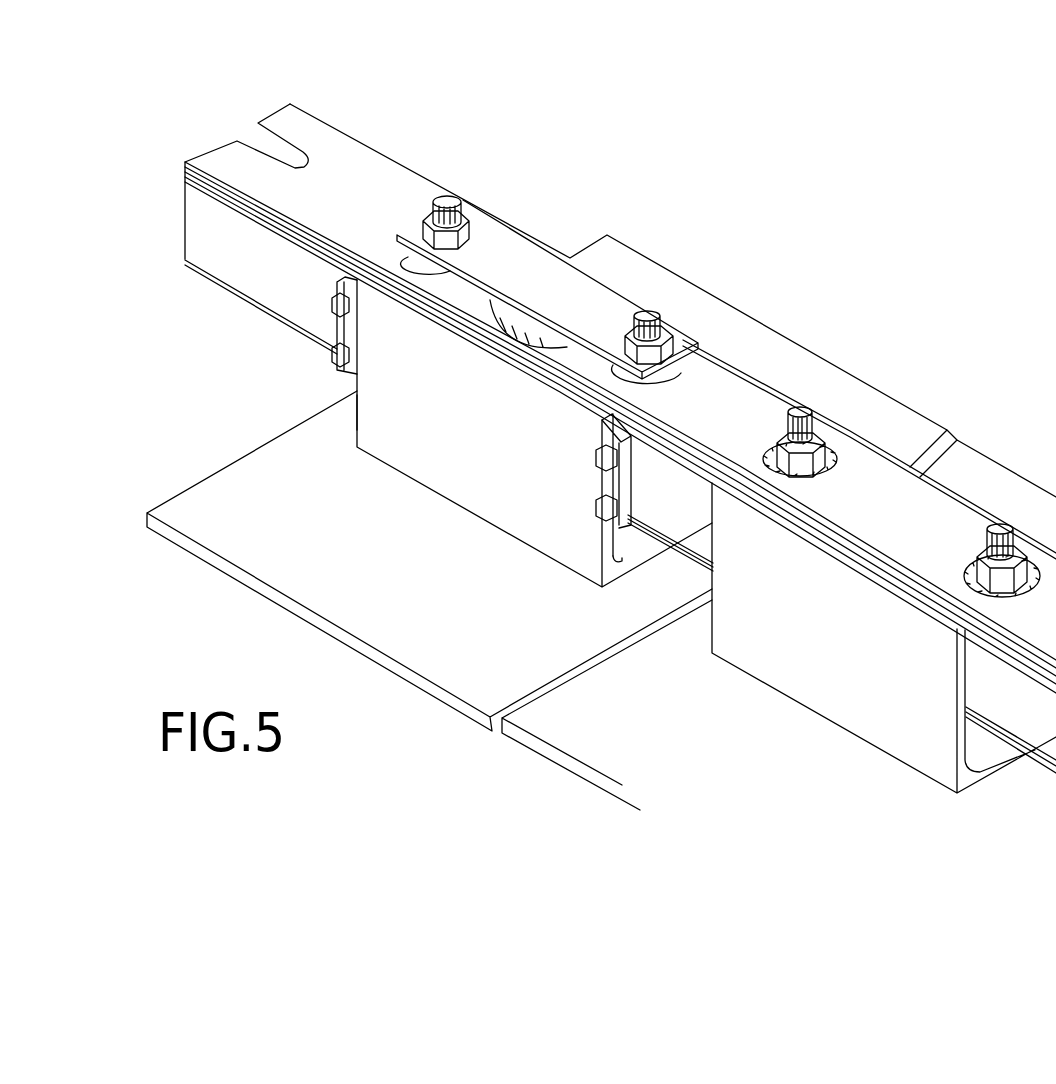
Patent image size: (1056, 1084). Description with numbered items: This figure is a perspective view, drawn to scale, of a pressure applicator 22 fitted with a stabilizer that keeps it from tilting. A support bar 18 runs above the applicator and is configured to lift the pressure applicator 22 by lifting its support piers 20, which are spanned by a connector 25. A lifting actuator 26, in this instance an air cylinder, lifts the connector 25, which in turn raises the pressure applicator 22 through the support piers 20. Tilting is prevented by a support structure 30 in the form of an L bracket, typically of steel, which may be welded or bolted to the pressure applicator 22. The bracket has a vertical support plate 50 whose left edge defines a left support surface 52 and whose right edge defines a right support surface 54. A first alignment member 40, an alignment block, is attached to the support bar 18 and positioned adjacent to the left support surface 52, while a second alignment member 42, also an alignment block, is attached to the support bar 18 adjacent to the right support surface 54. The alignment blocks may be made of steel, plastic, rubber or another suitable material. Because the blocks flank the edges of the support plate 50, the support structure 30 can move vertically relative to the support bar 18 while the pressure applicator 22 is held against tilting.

The support bar 18 is at (353, 177).
The support piers 20 is at (457, 205).
The pressure applicator 22 is at (218, 490).
The connector 25 is at (527, 267).
The lifting actuator 26 is at (593, 263).
The support structure 30 is at (485, 433).
The first alignment member 40 is at (347, 323).
The second alignment member 42 is at (618, 521).
The vertical support plate 50 is at (393, 435).
The left support surface 52 is at (357, 415).
The right support surface 54 is at (603, 550).